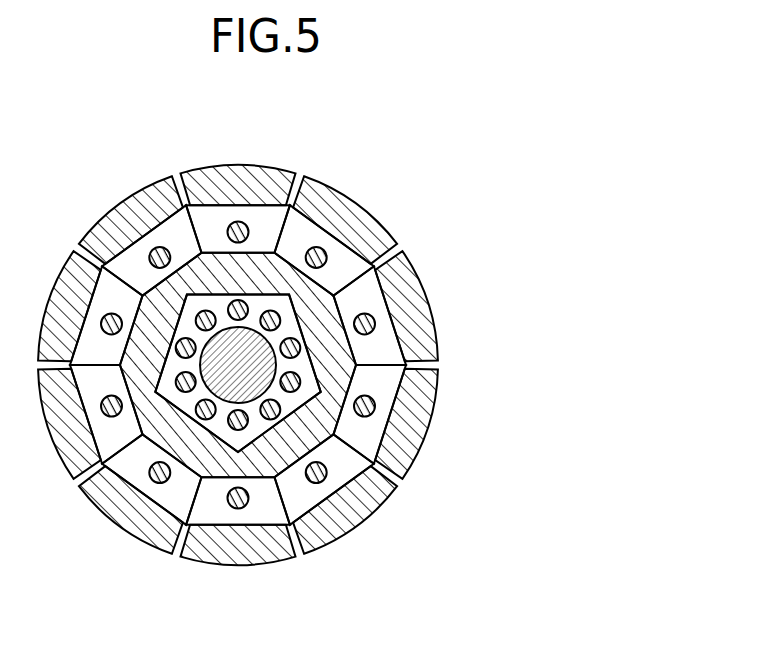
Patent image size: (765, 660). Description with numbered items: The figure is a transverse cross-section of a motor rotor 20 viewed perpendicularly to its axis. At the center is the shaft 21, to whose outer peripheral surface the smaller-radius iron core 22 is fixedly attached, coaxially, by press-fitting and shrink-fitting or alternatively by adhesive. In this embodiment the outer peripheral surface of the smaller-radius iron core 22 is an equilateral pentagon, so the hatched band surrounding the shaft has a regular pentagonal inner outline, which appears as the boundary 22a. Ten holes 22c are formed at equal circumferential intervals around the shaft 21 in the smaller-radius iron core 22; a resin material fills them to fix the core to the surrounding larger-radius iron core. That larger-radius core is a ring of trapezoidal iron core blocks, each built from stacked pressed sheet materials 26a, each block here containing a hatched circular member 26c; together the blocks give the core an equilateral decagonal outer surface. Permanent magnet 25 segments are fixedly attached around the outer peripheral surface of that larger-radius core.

The rotor 20 is at (274, 163).
The shaft 21 is at (237, 362).
The smaller-radius iron core 22 is at (316, 364).
The inner pentagonal sheath wall 22a is at (288, 327).
The holes 22c is at (274, 314).
The permanent magnet 25 is at (438, 344).
The sheet materials 26a is at (388, 385).
The strength members in segments 26c is at (380, 402).